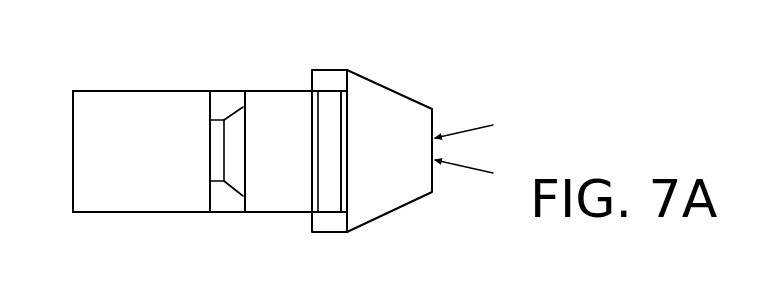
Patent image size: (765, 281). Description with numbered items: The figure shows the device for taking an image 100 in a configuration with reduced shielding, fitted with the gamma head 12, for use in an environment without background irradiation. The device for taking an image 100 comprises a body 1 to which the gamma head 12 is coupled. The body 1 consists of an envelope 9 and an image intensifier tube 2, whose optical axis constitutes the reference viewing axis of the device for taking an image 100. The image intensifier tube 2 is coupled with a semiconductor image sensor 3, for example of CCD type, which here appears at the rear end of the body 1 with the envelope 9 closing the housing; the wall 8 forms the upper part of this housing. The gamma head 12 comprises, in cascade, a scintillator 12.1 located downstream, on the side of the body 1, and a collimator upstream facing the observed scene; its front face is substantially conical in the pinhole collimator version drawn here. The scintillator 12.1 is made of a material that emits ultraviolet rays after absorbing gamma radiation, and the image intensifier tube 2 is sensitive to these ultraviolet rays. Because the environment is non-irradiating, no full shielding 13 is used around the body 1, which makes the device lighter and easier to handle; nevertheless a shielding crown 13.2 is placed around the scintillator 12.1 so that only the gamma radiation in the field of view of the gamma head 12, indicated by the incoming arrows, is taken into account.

The device for taking an image 100 is at (97, 82).
The housing top wall 8 is at (142, 99).
The envelope 9 is at (125, 215).
The semiconductor image sensor 3 is at (213, 122).
The image intensifier tube 2 is at (277, 95).
The body 1 is at (224, 215).
The shielding 13 is at (321, 236).
The shielding crown 13.2 is at (328, 75).
The scintillator 12.1 is at (332, 189).
The gamma head 12 is at (394, 97).